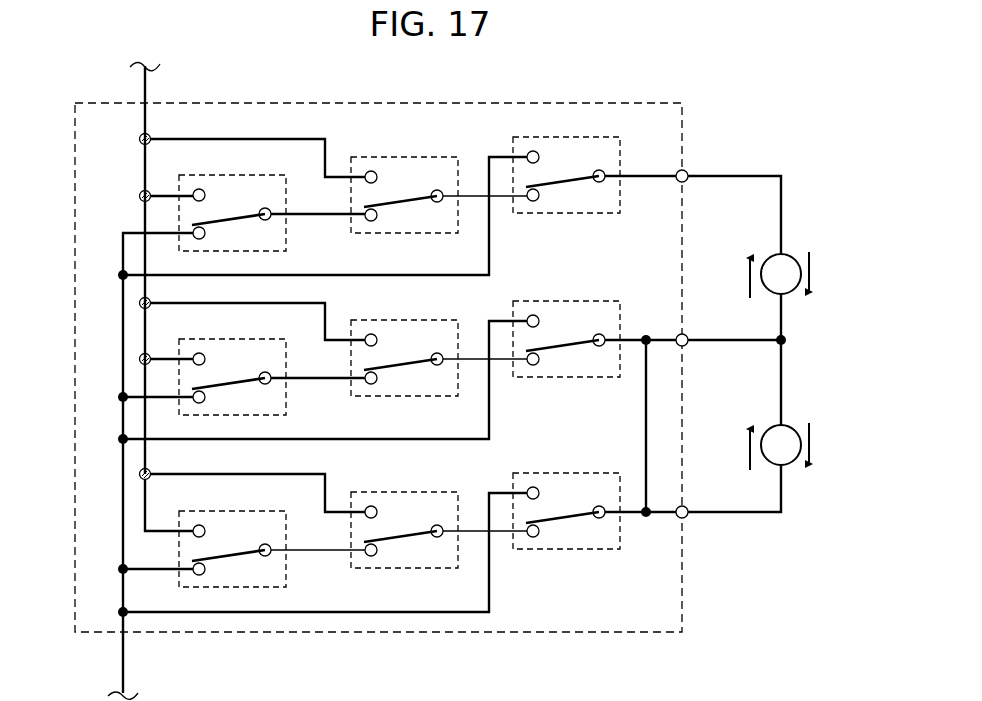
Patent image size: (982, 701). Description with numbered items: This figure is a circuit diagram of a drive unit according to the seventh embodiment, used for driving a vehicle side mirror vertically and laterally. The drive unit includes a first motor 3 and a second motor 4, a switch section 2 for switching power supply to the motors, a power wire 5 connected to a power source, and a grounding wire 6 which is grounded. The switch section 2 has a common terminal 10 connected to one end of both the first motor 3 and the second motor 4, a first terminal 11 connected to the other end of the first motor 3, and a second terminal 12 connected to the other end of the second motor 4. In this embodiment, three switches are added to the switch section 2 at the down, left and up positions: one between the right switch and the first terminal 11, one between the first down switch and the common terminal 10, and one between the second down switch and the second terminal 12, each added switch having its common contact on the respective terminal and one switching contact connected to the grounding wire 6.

The switch section 2 is at (683, 612).
The first motor 3 is at (787, 258).
The second motor 4 is at (787, 428).
The power wire 5 is at (145, 82).
The grounding wire 6 is at (123, 668).
The common terminal 10 is at (679, 335).
The first terminal 11 is at (687, 171).
The second terminal 12 is at (687, 518).